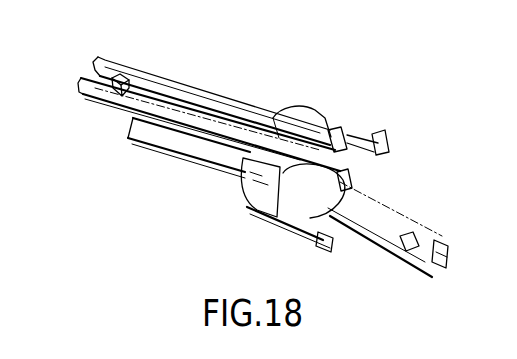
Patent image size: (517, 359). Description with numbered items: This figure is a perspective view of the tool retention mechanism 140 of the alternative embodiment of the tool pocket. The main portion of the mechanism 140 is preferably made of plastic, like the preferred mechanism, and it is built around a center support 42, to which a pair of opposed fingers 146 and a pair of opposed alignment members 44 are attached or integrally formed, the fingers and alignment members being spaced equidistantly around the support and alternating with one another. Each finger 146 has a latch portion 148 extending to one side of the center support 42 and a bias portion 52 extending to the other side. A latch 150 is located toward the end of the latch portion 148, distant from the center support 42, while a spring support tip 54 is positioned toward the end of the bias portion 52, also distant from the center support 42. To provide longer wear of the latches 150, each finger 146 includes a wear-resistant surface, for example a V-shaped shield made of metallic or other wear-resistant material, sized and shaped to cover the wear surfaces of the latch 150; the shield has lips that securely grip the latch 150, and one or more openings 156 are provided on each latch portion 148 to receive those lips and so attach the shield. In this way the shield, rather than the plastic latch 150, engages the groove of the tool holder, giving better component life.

The center support 42 is at (313, 110).
The alignment member 44 is at (390, 125).
The bias portion 52 is at (155, 83).
The spring support tip 54 is at (121, 74).
The tool retention mechanism 140 is at (224, 92).
The finger 146 is at (190, 152).
The latch portion 148 is at (368, 200).
The latch 150 is at (352, 130).
The opening 156 is at (440, 246).